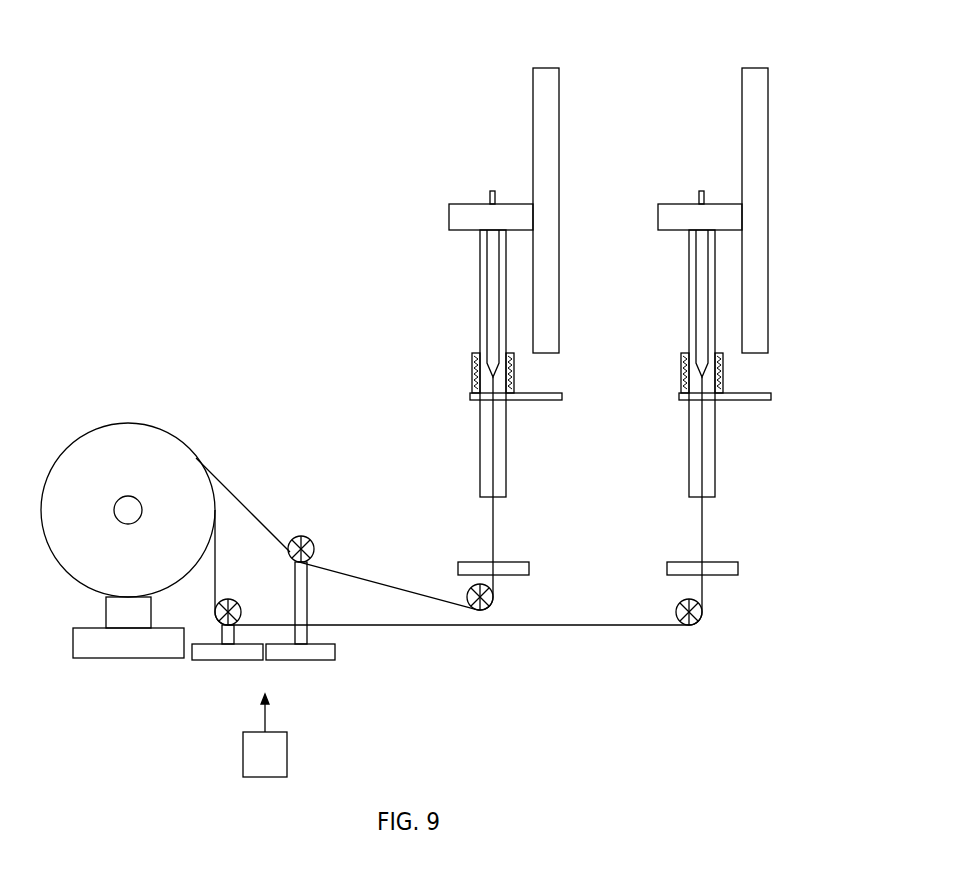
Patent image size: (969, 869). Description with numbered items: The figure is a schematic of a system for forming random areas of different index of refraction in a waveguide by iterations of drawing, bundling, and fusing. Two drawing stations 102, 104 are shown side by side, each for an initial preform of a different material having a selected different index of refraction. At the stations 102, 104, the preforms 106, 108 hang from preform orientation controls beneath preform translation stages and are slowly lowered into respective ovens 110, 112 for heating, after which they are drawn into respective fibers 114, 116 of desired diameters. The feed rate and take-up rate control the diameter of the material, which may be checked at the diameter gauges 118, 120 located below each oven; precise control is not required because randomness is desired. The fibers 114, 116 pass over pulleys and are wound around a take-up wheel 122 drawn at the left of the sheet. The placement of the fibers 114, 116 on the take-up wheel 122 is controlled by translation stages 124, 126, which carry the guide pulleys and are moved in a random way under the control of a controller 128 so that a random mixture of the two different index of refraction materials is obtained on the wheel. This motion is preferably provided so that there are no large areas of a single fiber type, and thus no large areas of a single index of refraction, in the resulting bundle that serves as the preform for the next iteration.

The station 102 is at (441, 52).
The station 104 is at (661, 52).
The preform 106 is at (480, 295).
The preform 108 is at (689, 295).
The oven 110 is at (471, 360).
The oven 112 is at (680, 360).
The fiber 114 is at (350, 578).
The fiber 116 is at (613, 625).
The diameter gauge 118 is at (508, 562).
The diameter gauge 120 is at (720, 562).
The take-up wheel 122 is at (72, 449).
The translation stage 124 is at (335, 655).
The translation stage 126 is at (192, 655).
The controller 128 is at (256, 772).